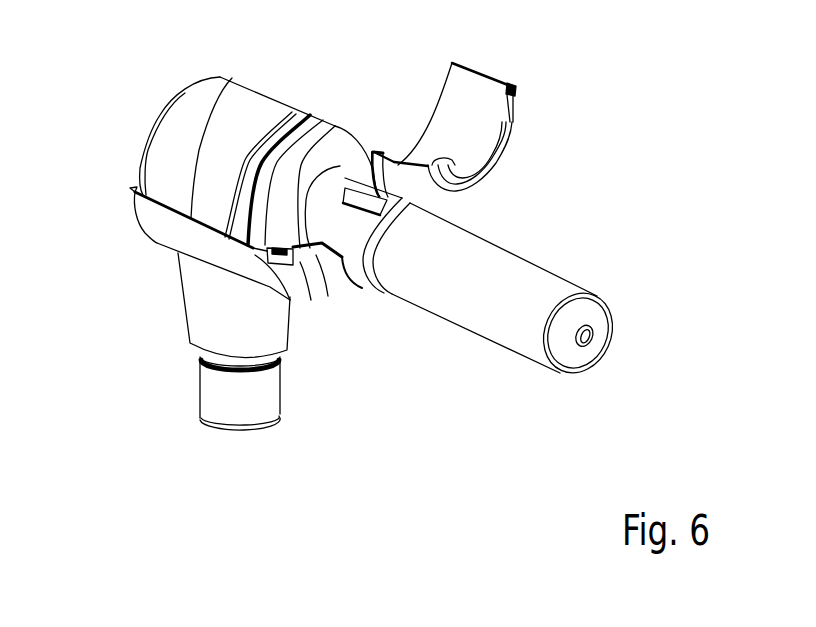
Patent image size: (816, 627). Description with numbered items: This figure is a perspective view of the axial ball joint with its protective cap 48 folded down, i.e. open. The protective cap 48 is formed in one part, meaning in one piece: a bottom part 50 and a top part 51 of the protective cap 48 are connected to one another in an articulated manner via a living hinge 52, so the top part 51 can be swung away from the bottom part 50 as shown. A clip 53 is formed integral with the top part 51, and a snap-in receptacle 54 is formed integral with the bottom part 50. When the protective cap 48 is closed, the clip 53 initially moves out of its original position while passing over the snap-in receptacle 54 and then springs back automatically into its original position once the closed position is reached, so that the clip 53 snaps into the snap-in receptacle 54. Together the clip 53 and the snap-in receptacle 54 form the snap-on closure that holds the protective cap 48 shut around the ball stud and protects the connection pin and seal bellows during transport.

The protective cap 48 is at (170, 287).
The bottom part 50 is at (295, 351).
The top part 51 is at (513, 151).
The living hinge 52 is at (372, 157).
The clip 53 is at (517, 88).
The snap-in receptacle 54 is at (280, 258).